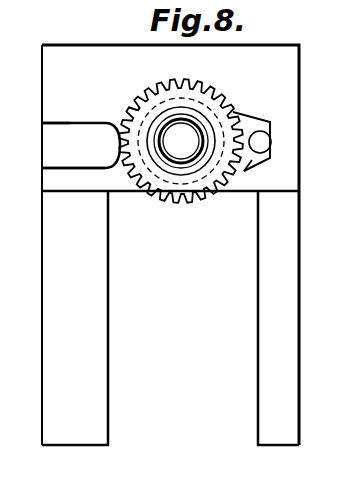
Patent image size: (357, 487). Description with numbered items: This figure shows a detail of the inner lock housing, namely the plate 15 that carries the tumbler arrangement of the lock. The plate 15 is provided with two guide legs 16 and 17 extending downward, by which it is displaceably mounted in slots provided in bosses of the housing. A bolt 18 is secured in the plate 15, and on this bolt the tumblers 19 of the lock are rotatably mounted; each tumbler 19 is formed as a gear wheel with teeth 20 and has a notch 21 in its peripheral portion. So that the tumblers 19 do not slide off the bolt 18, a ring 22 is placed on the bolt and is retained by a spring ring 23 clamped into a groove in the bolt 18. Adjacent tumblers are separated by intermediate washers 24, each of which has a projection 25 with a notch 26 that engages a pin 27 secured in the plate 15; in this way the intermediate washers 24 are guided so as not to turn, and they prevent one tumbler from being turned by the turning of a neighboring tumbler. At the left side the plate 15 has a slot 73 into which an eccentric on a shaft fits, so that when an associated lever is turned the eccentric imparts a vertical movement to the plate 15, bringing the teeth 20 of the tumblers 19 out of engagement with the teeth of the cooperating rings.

The plate 15 is at (281, 92).
The guide leg 16 is at (92, 296).
The guide leg 17 is at (275, 294).
The bolt 18 is at (168, 154).
The tumbler 19 is at (160, 97).
The teeth 20 is at (218, 92).
The notch 21 is at (133, 107).
The ring 22 is at (168, 167).
The spring ring 23 is at (180, 163).
The intermediate washer 24 is at (127, 150).
The projection 25 is at (252, 162).
The notch 26 is at (278, 127).
The pin 27 is at (264, 144).
The slot 73 is at (63, 152).